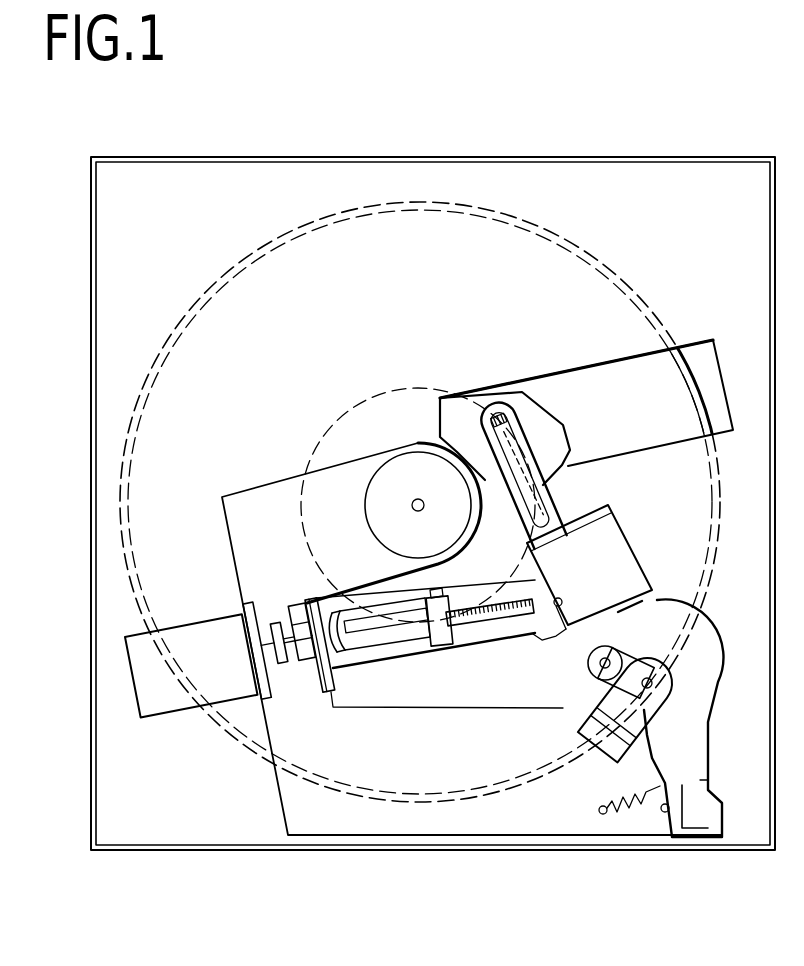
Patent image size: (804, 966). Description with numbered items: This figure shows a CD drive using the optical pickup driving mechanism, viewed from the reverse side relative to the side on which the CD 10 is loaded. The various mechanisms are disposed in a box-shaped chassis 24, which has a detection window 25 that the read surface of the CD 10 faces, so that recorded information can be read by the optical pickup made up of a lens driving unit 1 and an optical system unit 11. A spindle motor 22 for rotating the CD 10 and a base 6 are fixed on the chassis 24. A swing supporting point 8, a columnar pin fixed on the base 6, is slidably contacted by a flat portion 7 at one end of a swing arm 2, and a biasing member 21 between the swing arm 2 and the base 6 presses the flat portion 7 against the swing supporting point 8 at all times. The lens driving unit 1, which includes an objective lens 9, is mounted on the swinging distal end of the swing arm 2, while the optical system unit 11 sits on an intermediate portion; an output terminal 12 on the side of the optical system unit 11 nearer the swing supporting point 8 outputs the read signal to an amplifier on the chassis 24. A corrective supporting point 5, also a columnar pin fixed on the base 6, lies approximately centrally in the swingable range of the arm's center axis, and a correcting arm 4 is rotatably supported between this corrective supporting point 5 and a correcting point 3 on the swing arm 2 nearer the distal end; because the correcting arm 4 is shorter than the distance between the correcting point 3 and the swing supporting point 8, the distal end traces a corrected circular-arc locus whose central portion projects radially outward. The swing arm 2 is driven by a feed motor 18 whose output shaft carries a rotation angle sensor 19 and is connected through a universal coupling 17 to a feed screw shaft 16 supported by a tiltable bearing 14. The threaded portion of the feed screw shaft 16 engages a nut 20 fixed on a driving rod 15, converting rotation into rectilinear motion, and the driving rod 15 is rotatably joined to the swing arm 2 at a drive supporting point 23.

The lens driving unit 1 is at (521, 396).
The swing arm 2 is at (706, 640).
The correcting point 3 is at (594, 680).
The correcting arm 4 is at (622, 662).
The corrective supporting point 5 is at (653, 684).
The base 6 is at (262, 498).
The flat portion 7 is at (672, 800).
The swing supporting point 8 is at (665, 813).
The objective lens 9 is at (488, 400).
The CD 10 is at (621, 372).
The optical system unit 11 is at (612, 540).
The output terminal 12 is at (656, 604).
The bearing 14 is at (328, 700).
The driving rod 15 is at (501, 634).
The feed screw shaft 16 is at (387, 641).
The universal coupling 17 is at (282, 626).
The feed motor 18 is at (176, 705).
The rotation angle sensor 19 is at (272, 701).
The nut 20 is at (434, 646).
The biasing member 21 is at (606, 801).
The spindle motor 22 is at (405, 456).
The drive supporting point 23 is at (556, 610).
The chassis 24 is at (188, 182).
The detection window 25 is at (701, 346).